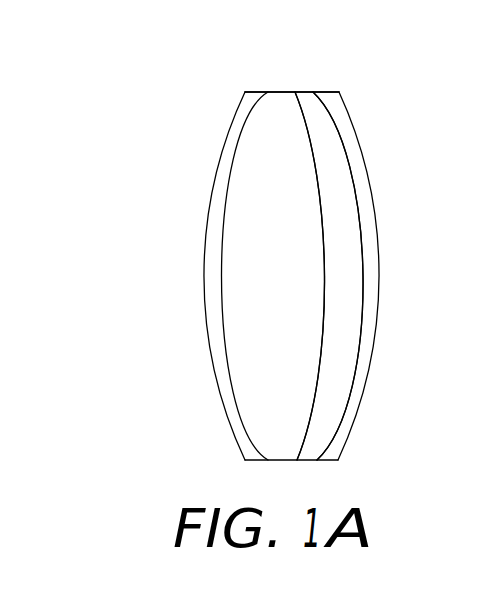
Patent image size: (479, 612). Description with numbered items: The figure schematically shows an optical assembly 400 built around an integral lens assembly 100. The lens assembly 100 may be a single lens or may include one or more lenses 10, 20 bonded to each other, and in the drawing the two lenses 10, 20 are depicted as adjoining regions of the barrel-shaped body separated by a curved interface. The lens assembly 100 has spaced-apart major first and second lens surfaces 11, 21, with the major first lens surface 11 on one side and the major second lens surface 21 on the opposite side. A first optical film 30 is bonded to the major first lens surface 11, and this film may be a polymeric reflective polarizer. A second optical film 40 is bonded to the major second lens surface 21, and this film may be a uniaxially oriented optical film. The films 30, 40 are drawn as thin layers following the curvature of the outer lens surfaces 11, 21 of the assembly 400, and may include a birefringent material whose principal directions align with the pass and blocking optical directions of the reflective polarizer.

The optical assembly 400 is at (150, 76).
The integral lens assembly 100 is at (318, 83).
The lens 10 is at (347, 387).
The lens 20 is at (288, 387).
The major first lens surface 11 is at (352, 170).
The major second lens surface 21 is at (228, 180).
The first optical film 30 is at (373, 318).
The second optical film 40 is at (215, 322).